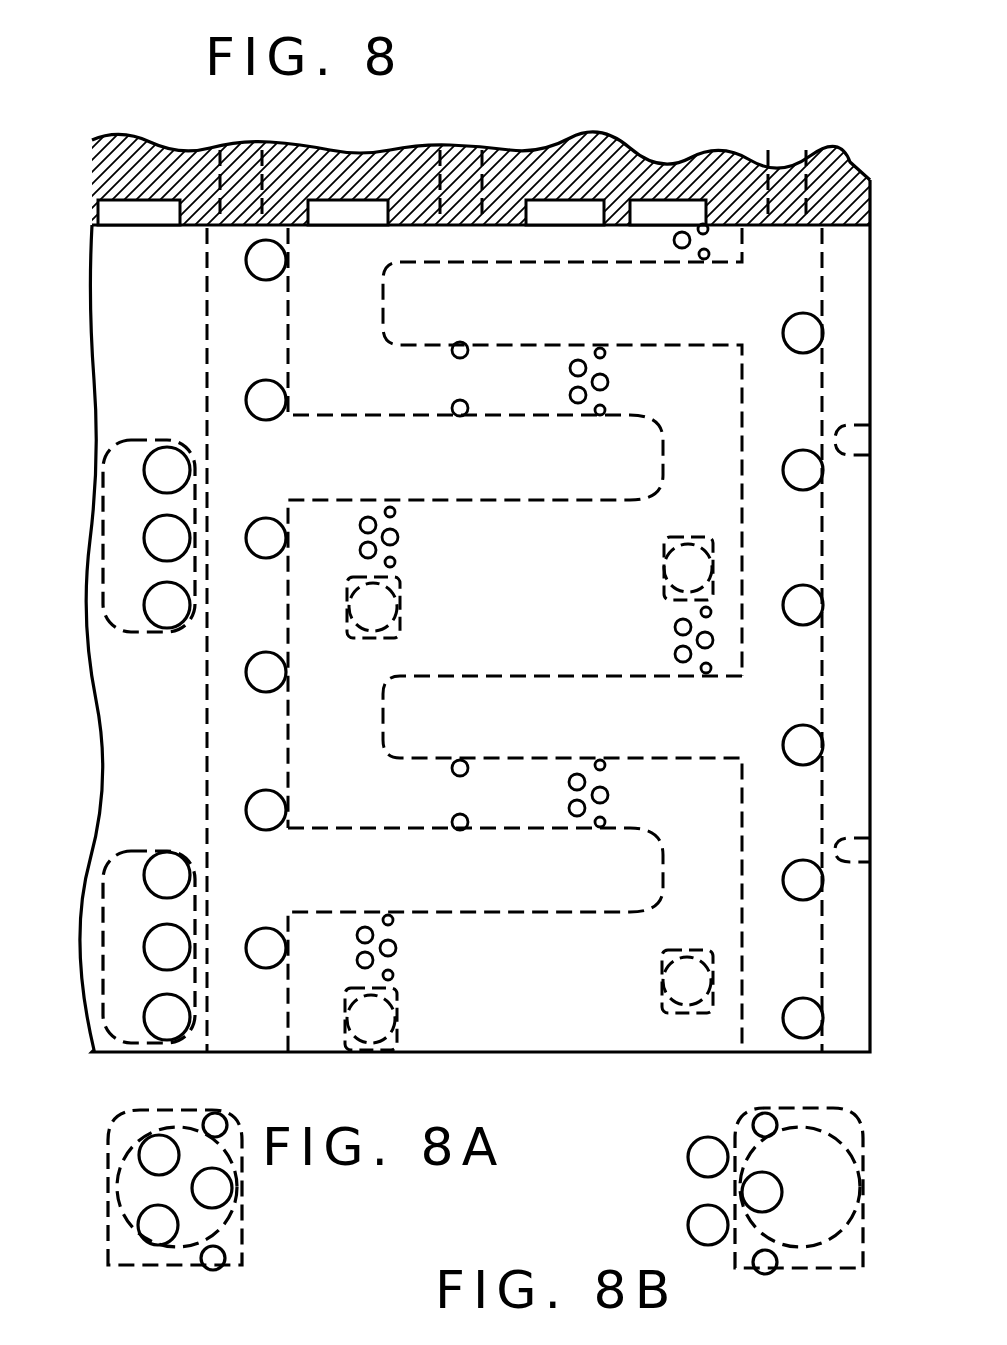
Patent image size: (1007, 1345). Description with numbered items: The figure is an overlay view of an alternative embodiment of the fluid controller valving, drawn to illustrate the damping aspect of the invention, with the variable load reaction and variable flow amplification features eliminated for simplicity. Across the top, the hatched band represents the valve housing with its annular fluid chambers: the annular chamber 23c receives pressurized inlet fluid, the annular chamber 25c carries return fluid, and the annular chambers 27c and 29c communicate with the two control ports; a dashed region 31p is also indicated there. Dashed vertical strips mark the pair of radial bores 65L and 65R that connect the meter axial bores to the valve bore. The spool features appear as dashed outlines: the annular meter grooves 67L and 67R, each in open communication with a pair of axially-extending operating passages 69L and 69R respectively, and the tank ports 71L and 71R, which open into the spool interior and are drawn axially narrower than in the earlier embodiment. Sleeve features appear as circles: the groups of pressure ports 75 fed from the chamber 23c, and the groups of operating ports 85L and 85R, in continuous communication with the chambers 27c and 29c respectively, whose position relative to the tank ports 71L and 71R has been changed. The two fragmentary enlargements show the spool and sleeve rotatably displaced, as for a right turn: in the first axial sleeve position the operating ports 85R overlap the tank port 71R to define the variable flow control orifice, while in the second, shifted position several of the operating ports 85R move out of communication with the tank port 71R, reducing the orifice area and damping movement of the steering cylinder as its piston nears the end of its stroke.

In FIG. 8, the annular chamber 23c is at (565, 212).
In FIG. 8, the annular chamber 25c is at (142, 212).
In FIG. 8, the annular chamber 27c is at (362, 212).
In FIG. 8, the annular chamber 29c is at (682, 210).
In FIG. 8, the plated connector portion 31p is at (462, 180).
In FIG. 8, the radial bore 65L is at (245, 165).
In FIG. 8, the radial bore 65R is at (790, 165).
In FIG. 8, the annular meter groove 67L is at (240, 752).
In FIG. 8, the annular meter groove 67R is at (790, 795).
In FIG. 8, the axially-extending operating passage 69L is at (528, 468).
In FIG. 8, the axially-extending operating passage 69R is at (395, 268).
In FIG. 8, the tank port 71L is at (375, 612).
In FIG. 8, the tank port 71R is at (690, 565).
In FIG. 8A, the tank port 71R is at (130, 1168).
In FIG. 8B, the tank port 71R is at (830, 1160).
In FIG. 8, the pressure ports 75 is at (622, 382).
In FIG. 8, the operating ports 85L is at (412, 547).
In FIG. 8, the operating ports 85R is at (660, 645).
In FIG. 8A, the operating ports 85R is at (225, 1222).
In FIG. 8B, the operating ports 85R is at (690, 1192).